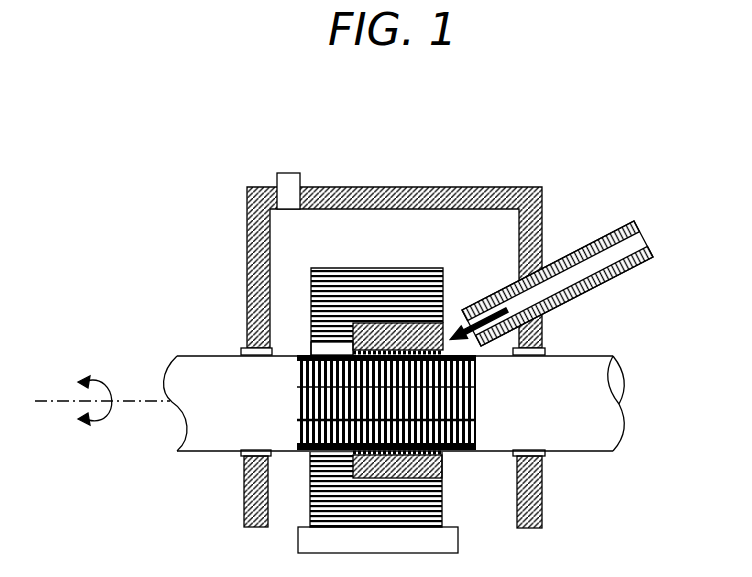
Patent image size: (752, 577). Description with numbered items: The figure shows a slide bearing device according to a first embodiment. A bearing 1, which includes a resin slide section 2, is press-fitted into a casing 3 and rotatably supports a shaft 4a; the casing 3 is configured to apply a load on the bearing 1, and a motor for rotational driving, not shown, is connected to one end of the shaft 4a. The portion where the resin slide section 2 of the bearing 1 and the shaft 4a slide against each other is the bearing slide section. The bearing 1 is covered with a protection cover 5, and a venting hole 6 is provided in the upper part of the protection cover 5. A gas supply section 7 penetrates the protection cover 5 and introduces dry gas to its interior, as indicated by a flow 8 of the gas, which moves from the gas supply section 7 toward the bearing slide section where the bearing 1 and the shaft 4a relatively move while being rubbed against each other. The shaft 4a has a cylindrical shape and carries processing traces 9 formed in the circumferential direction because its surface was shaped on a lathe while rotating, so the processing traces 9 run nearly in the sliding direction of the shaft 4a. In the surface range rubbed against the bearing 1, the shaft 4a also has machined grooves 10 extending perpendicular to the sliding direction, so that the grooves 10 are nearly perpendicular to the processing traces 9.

The bearing 1 is at (418, 314).
The resin slide section 2 is at (372, 344).
The casing 3 is at (433, 298).
The shaft 4a is at (618, 377).
The protection cover 5 is at (253, 260).
The venting hole 6 is at (288, 185).
The gas supply section 7 is at (580, 248).
The flow of the gas 8 is at (542, 326).
The processing traces 9 is at (313, 418).
The grooves 10 is at (317, 422).